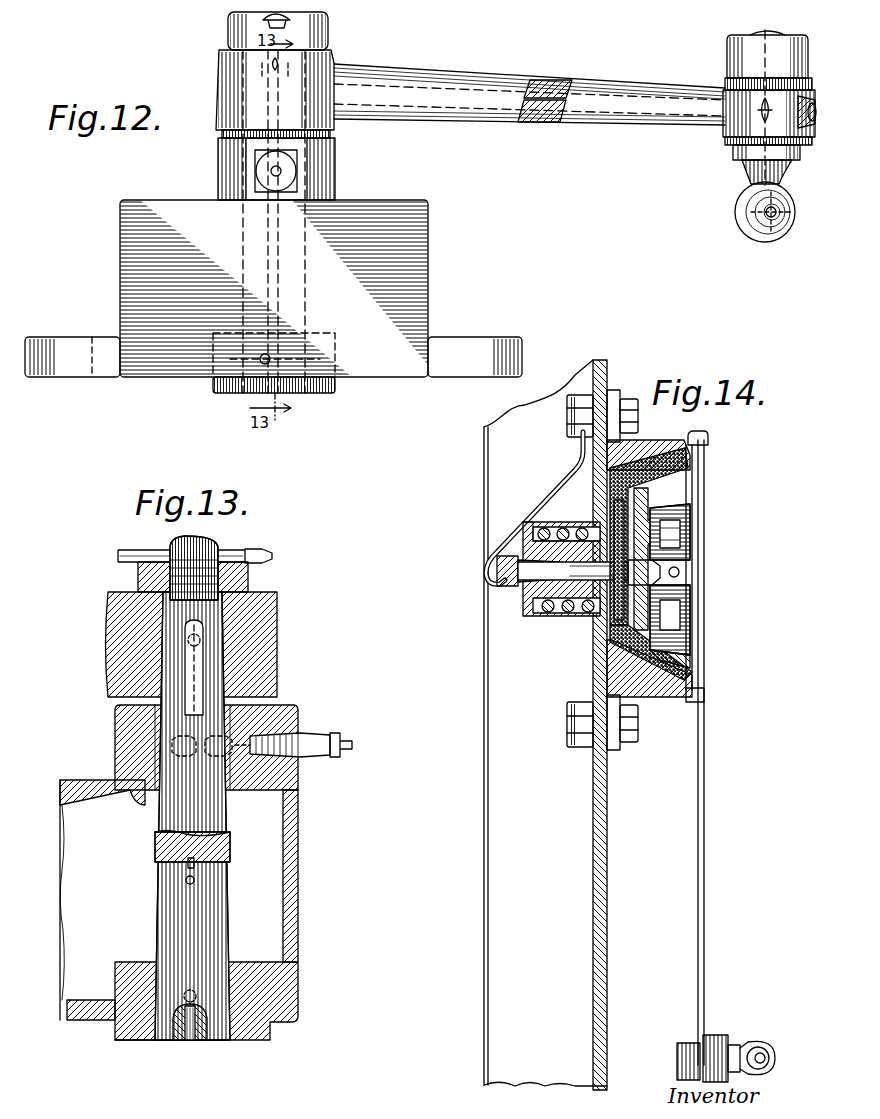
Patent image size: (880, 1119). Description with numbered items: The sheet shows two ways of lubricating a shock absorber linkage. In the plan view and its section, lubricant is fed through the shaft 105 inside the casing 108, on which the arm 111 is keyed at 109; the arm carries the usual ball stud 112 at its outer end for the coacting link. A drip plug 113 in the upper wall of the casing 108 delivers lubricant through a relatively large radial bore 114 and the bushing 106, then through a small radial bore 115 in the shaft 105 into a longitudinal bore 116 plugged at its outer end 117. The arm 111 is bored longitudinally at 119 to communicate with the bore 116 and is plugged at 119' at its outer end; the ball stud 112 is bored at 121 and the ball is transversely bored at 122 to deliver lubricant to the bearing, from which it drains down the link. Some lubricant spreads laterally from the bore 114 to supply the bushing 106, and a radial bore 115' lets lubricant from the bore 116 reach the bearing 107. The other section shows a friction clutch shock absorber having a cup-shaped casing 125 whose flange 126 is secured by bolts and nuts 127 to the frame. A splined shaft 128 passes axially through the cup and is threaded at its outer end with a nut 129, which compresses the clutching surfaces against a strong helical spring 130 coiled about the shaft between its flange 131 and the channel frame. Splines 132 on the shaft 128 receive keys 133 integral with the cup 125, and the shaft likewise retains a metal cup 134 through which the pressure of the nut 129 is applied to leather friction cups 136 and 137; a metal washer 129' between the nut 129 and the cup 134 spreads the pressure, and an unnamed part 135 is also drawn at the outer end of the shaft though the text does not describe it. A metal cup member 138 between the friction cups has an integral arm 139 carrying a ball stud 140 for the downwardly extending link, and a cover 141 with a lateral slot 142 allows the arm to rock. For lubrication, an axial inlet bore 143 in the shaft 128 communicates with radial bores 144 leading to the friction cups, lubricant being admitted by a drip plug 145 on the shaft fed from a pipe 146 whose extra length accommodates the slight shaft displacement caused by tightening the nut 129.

In FIG. 13, the shaft 105 is at (167, 822).
In FIG. 13, the bushing 106 is at (233, 723).
In FIG. 13, the bearing 107 is at (237, 988).
In FIG. 12, the casing 108 is at (140, 222).
In FIG. 13, the key 109 is at (200, 706).
In FIG. 12, the arm 111 is at (463, 82).
In FIG. 12, the ball stud 112 is at (736, 200).
In FIG. 12, the drip plug 113 is at (283, 178).
In FIG. 13, the drip plug 113 is at (302, 733).
In FIG. 13, the radial bore 114 is at (235, 792).
In FIG. 13, the radial bore 115 is at (250, 773).
In FIG. 13, the radial bore 115' is at (99, 1060).
In FIG. 12, the longitudinal bore 116 is at (247, 138).
In FIG. 13, the longitudinal bore 116 is at (190, 858).
In FIG. 13, the plug 117 is at (192, 1040).
In FIG. 12, the longitudinal bore 119 is at (549, 86).
In FIG. 12, the plug 119' is at (811, 136).
In FIG. 12, the bore 121 is at (748, 173).
In FIG. 12, the transverse bore 122 is at (738, 227).
In FIG. 14, the cup-shaped casing 125 is at (637, 450).
In FIG. 14, the flange 126 is at (610, 388).
In FIG. 14, the bolts and nuts 127 is at (628, 396).
In FIG. 14, the splined shaft 128 is at (550, 603).
In FIG. 14, the nut 129 is at (708, 532).
In FIG. 14, the metal washer 129' is at (710, 629).
In FIG. 14, the helical spring 130 is at (572, 510).
In FIG. 14, the flange 131 is at (533, 527).
In FIG. 14, the splines 132 is at (613, 605).
In FIG. 14, the teeth or keys 133 is at (603, 597).
In FIG. 14, the metal cup 134 is at (673, 657).
In FIG. 14, the rod head 135 is at (650, 600).
In FIG. 14, the friction cup 136 is at (650, 492).
In FIG. 14, the friction cup 137 is at (613, 487).
In FIG. 14, the metal cup member 138 is at (648, 495).
In FIG. 14, the arm 139 is at (700, 762).
In FIG. 14, the ball stud 140 is at (753, 1047).
In FIG. 14, the cover 141 is at (707, 550).
In FIG. 14, the slot 142 is at (707, 697).
In FIG. 14, the axial lubricant inlet bore 143 is at (578, 612).
In FIG. 14, the radial bores 144 is at (680, 583).
In FIG. 14, the drip plug 145 is at (518, 583).
In FIG. 14, the pipe 146 is at (557, 471).